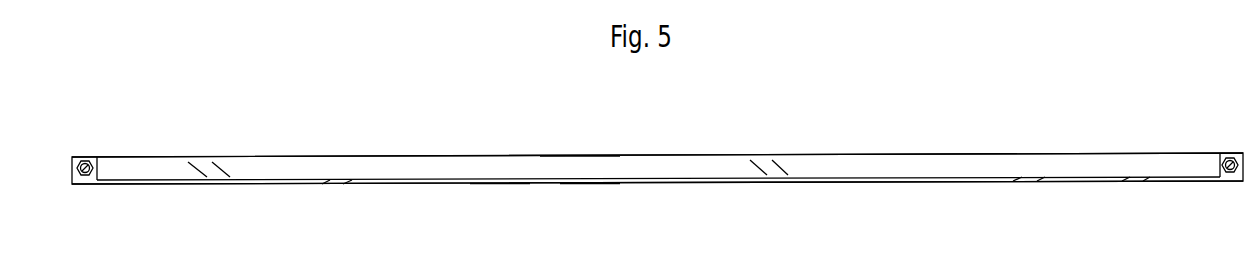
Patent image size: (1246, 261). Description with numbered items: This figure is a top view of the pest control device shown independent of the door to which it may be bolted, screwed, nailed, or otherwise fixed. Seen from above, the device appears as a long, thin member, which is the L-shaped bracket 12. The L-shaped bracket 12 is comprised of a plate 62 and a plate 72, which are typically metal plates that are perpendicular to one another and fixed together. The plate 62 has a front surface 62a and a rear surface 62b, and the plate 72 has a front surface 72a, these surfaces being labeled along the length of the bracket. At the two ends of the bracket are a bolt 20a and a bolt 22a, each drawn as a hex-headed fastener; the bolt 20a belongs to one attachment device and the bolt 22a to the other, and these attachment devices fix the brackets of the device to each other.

The L-shaped bracket 12 is at (717, 178).
The bolt 20a is at (1225, 160).
The bolt 22a is at (88, 163).
The plate 62 is at (677, 182).
The front surface of plate 62 62a is at (582, 183).
The rear surface of plate 62 62b is at (503, 173).
The plate 72 is at (638, 155).
The front surface of plate 72 72a is at (578, 178).